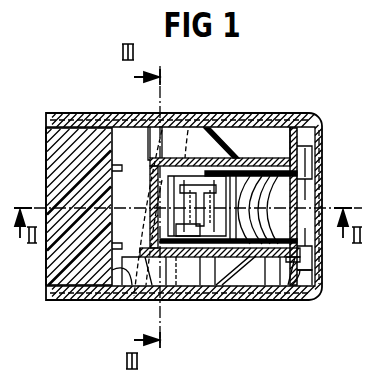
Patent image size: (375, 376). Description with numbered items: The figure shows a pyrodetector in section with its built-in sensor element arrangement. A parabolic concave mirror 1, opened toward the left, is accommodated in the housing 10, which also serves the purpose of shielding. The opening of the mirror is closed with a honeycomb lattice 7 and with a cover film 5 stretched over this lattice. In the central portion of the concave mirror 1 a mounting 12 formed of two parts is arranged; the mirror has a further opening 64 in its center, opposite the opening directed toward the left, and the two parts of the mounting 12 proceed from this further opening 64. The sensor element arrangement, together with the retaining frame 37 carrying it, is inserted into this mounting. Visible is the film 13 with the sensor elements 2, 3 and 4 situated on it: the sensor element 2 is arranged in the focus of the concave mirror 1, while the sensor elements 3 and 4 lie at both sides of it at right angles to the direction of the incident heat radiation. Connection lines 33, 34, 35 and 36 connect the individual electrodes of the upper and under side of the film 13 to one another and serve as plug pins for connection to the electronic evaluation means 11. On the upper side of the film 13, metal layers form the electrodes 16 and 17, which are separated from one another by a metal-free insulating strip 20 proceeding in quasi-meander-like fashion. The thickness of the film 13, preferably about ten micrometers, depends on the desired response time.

The parabolic concave mirror 1 is at (190, 284).
The sensor element 2 is at (172, 332).
The sensor element 3 is at (166, 258).
The sensor element 4 is at (164, 134).
The cover film 5 is at (128, 295).
The honeycomb lattice 7 is at (58, 262).
The housing 10 is at (278, 114).
The electronic evaluation means 11 is at (296, 298).
The mounting 12 is at (187, 135).
The film 13 is at (146, 276).
The electrode 16 is at (176, 221).
The electrode 17 is at (317, 187).
The insulating strip 20 is at (196, 130).
The connection line 33 is at (298, 272).
The connection line 34 is at (300, 155).
The connection line 35 is at (300, 252).
The connection line 36 is at (242, 185).
The retaining frame 37 is at (156, 190).
The further opening 64 is at (255, 198).